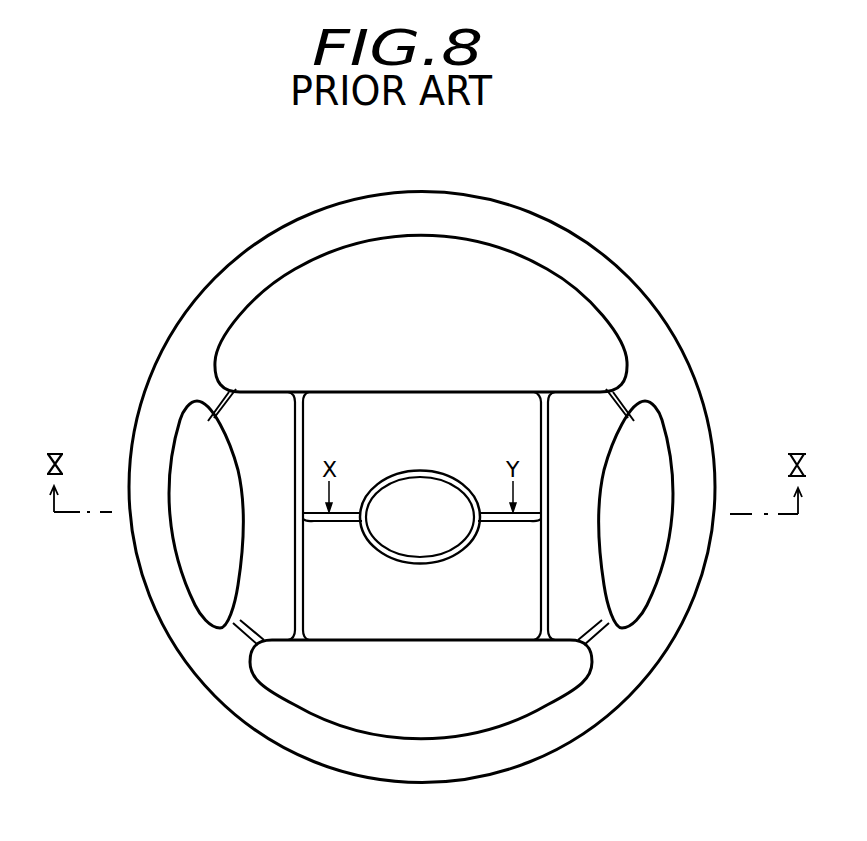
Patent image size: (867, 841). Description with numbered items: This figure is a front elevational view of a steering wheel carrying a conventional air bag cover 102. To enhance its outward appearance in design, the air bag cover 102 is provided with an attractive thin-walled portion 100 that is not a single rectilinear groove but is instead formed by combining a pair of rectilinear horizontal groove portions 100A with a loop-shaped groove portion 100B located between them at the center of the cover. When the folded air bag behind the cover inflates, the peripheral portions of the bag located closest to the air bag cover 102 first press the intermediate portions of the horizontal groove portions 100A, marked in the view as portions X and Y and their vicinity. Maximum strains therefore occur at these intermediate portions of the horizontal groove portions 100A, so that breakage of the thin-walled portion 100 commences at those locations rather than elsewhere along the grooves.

The air bag cover 102 is at (417, 384).
The thin-walled portion 100 is at (426, 515).
The horizontal groove portions 100A is at (307, 523).
The loop-shaped groove portion 100B is at (425, 564).